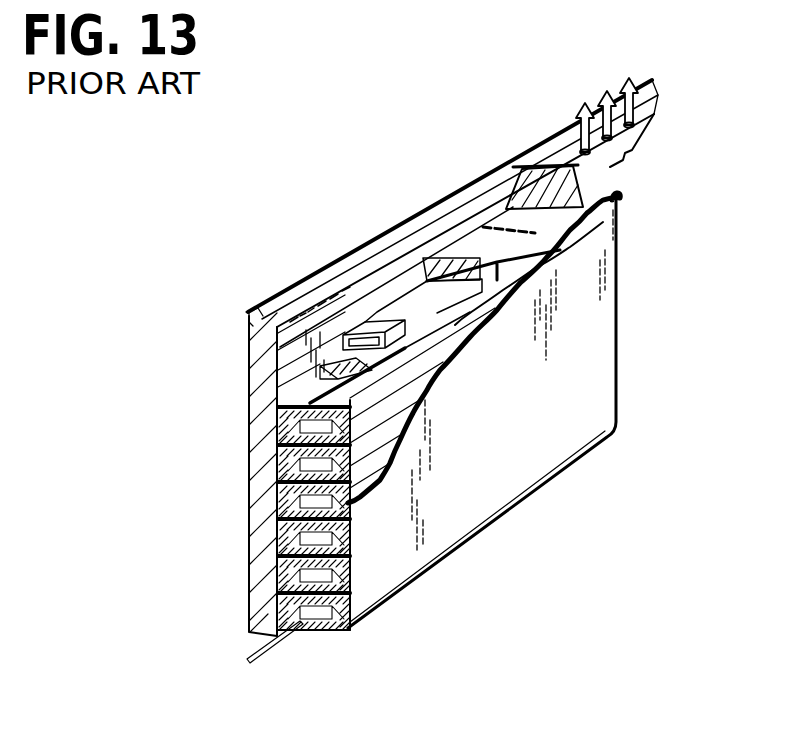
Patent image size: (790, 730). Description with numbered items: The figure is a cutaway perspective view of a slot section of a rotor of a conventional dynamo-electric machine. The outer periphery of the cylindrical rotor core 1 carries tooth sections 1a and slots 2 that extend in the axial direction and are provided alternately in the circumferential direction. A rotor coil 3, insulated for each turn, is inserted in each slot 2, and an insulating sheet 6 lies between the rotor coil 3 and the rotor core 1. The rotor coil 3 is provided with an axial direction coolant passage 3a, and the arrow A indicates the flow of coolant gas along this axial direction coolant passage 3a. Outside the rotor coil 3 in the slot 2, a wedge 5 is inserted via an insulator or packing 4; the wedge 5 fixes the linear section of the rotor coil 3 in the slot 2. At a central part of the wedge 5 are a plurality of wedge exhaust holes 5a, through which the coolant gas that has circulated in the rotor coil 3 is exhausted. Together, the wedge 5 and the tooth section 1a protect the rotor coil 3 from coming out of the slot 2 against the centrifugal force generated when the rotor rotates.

The rotor core 1 is at (384, 230).
The tooth section 1a is at (263, 353).
The slot 2 is at (313, 323).
The rotor coil 3 is at (445, 365).
The axial direction coolant passage 3a is at (287, 415).
The insulator (packing) 4 is at (590, 249).
The wedge 5 is at (623, 199).
The wedge exhaust holes 5a is at (640, 114).
The insulating sheet 6 is at (562, 412).
The arrow indicating coolant gas flow A is at (270, 647).